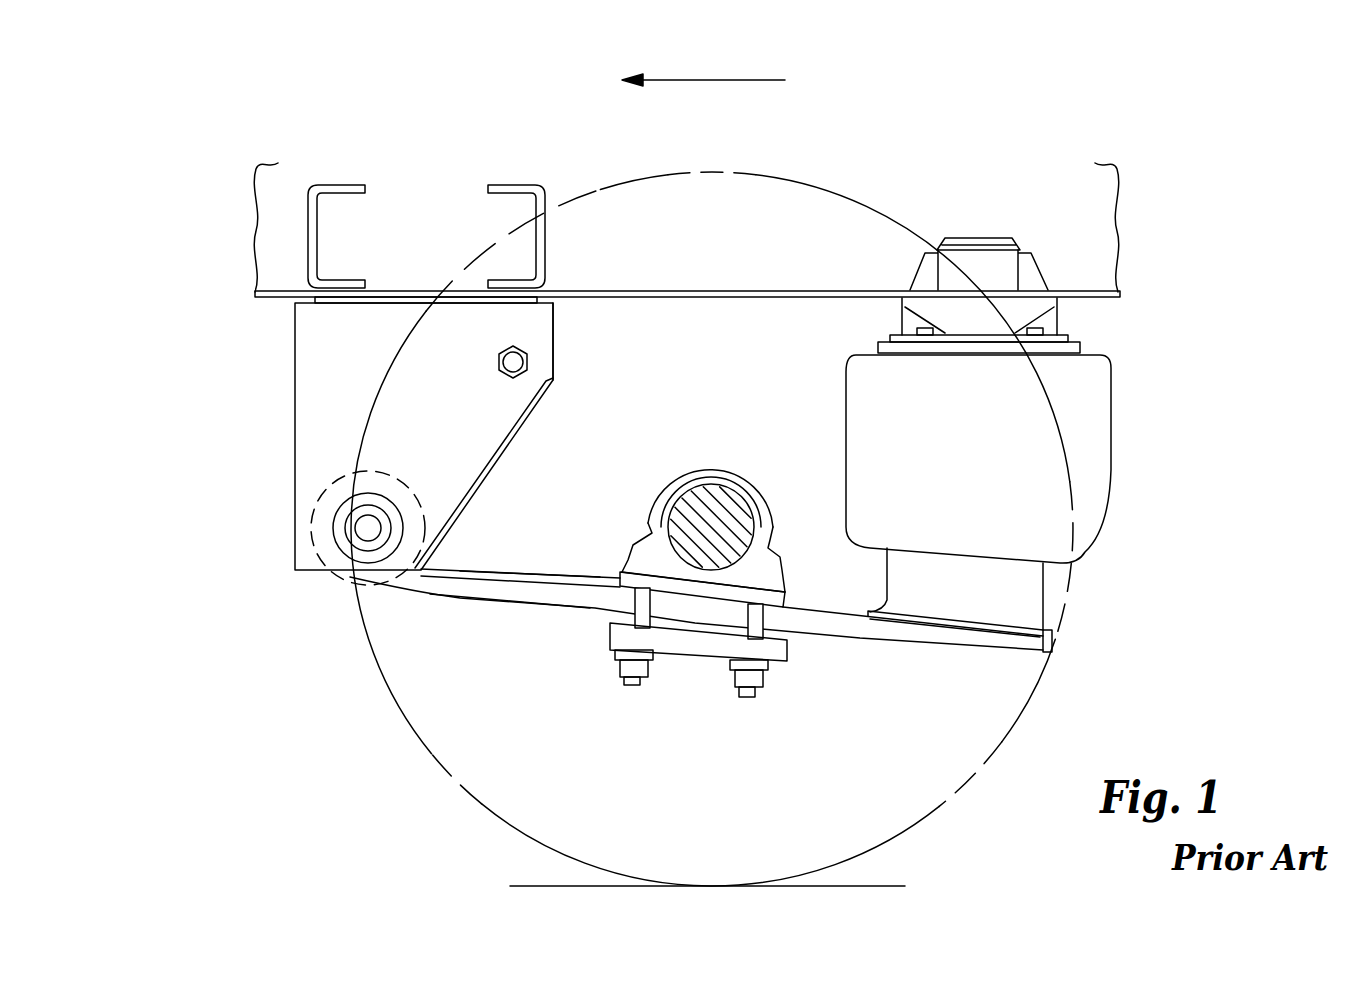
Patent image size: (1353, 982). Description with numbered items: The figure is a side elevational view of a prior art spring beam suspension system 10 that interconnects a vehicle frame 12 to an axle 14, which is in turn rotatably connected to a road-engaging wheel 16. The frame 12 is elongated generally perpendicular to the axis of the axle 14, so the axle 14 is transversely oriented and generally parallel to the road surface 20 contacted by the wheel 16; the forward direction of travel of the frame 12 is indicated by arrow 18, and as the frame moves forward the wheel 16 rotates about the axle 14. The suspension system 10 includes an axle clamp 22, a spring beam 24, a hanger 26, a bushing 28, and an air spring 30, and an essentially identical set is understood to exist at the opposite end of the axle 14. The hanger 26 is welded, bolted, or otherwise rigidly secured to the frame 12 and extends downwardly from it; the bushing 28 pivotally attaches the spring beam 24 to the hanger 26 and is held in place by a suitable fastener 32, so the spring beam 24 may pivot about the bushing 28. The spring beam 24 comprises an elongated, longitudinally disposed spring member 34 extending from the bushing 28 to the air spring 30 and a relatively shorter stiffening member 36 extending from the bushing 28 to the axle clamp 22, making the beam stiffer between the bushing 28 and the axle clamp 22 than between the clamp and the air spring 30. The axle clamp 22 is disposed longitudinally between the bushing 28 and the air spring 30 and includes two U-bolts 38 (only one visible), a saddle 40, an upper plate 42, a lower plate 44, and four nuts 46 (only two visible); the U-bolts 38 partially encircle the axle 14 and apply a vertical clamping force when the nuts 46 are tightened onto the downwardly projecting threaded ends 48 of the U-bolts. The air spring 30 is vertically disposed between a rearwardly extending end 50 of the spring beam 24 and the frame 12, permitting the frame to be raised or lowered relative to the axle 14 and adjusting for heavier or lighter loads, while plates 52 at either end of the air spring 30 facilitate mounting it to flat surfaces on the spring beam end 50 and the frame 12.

The spring beam suspension system 10 is at (282, 386).
The vehicle frame 12 is at (734, 278).
The axle 14 is at (752, 495).
The road-engaging wheel 16 is at (372, 670).
The arrow 18 is at (721, 80).
The road surface 20 is at (535, 886).
The axle clamp 22 is at (640, 500).
The spring beam 24 is at (526, 626).
The hanger 26 is at (556, 351).
The bushing 28 is at (314, 503).
The air spring 30 is at (835, 408).
The fastener 32 is at (390, 510).
The spring member 34 is at (497, 566).
The stiffening member 36 is at (440, 593).
The U-bolts 38 is at (703, 478).
The saddle 40 is at (780, 570).
The upper plate 42 is at (619, 575).
The lower plate 44 is at (787, 650).
The nuts 46 is at (618, 660).
The threaded ends 48 is at (630, 682).
The rearwardly extending end 50 is at (917, 645).
The plates 52 is at (1083, 345).